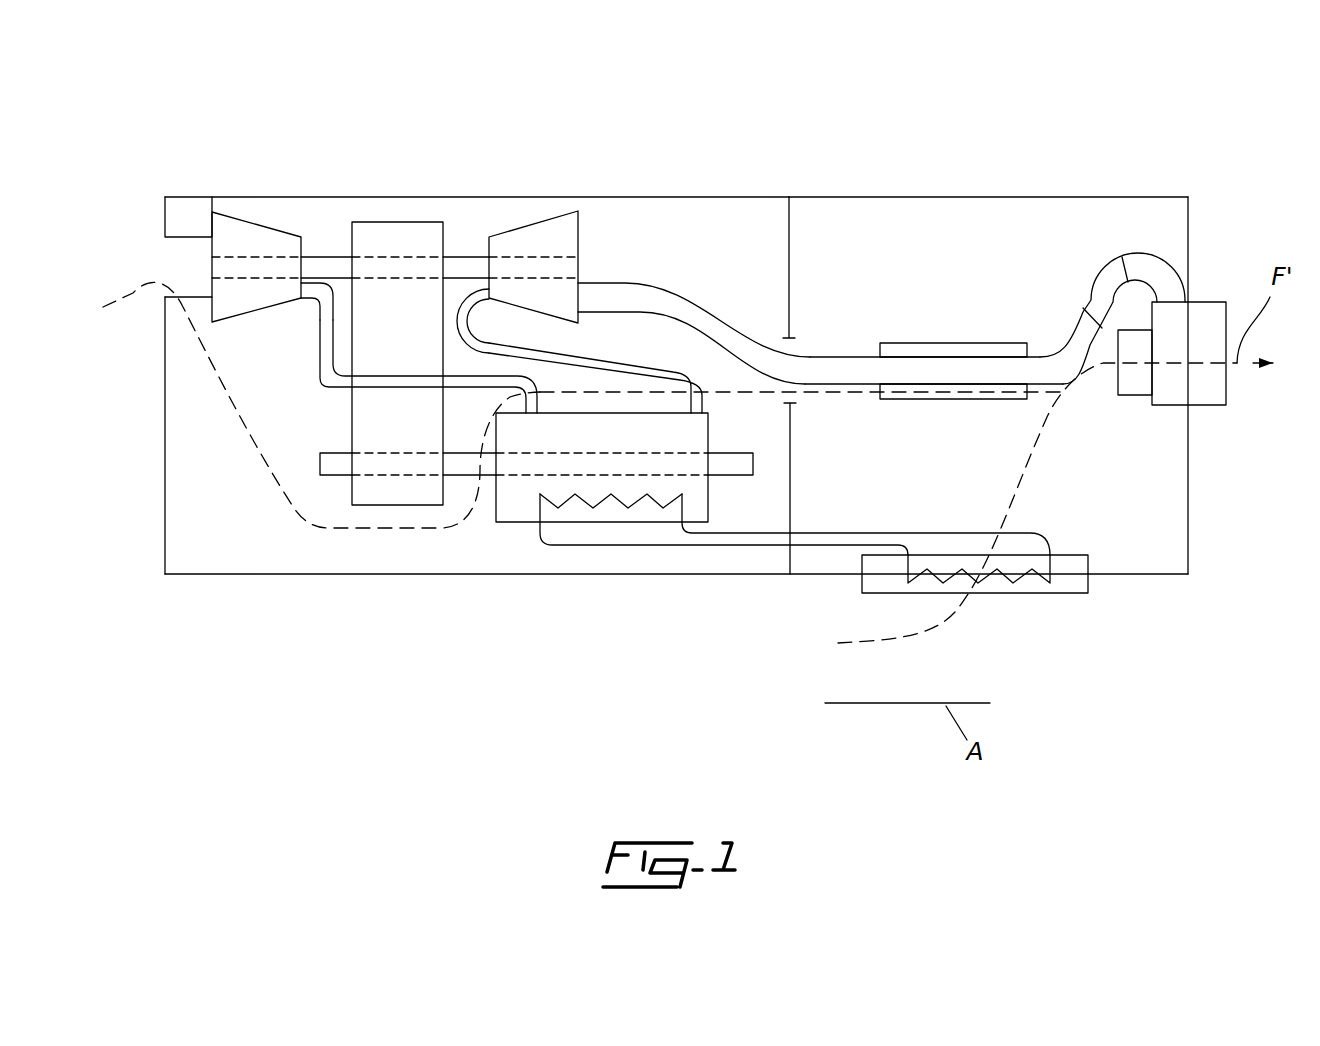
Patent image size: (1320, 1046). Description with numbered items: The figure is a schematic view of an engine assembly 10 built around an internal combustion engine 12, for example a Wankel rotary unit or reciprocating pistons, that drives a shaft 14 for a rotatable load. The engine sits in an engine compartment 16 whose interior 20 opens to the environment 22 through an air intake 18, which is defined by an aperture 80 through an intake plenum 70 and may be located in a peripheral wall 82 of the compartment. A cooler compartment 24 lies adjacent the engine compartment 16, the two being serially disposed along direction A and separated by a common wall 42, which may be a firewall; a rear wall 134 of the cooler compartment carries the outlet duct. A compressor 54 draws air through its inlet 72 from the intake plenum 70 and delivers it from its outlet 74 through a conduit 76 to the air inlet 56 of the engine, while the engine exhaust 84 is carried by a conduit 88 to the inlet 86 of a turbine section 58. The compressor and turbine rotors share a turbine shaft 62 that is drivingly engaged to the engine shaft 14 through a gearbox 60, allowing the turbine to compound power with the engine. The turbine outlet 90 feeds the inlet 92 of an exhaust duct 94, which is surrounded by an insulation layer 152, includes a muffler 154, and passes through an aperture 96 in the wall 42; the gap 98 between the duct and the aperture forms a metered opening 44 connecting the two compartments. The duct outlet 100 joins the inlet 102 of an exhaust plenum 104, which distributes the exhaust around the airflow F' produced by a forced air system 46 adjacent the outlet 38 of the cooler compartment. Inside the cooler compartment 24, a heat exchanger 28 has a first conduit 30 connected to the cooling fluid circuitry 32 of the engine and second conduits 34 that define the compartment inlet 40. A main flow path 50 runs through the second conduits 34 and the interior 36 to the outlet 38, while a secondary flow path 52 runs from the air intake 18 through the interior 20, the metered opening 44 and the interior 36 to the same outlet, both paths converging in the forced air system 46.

The engine assembly 10 is at (691, 348).
The internal combustion engine 12 is at (642, 492).
The shaft 14 is at (485, 465).
The engine compartment 16 is at (650, 197).
The air intake 18 is at (197, 371).
The aperture 80 is at (177, 315).
The interior 20 is at (753, 236).
The environment 22 is at (233, 664).
The cooler compartment 24 is at (1053, 197).
The heat exchanger 28 is at (1067, 594).
The first conduit 30 is at (692, 545).
The fluid circuitry 32 is at (688, 504).
The second conduits 34 is at (928, 610).
The interior 36 is at (1143, 228).
The outlet 38 is at (1200, 416).
The inlet 40 is at (1007, 580).
The wall 42 is at (795, 230).
The metered opening 44 is at (923, 309).
The gap 98 is at (806, 345).
The forced air system 46 is at (1133, 396).
The main flow path 50 is at (1027, 447).
The secondary flow path 52 is at (373, 531).
The compressor 54 is at (233, 217).
The air inlet 56 is at (538, 418).
The turbine section 58 is at (580, 227).
The gearbox 60 is at (390, 222).
The turbine shaft 62 is at (463, 257).
The intake plenum 70 is at (183, 181).
The inlet 72 is at (206, 228).
The outlet 74 is at (298, 306).
The conduit 76 is at (385, 348).
The peripheral wall 82 is at (165, 496).
The exhaust 84 is at (717, 405).
The inlet 86 is at (484, 311).
The conduit 88 is at (618, 369).
The outlet 90 is at (694, 320).
The inlet 92 is at (604, 278).
The exhaust duct 94 is at (881, 337).
The aperture 96 is at (806, 400).
The outlet 100 is at (1059, 297).
The inlet 102 is at (1059, 297).
The exhaust plenum 104 is at (1217, 347).
The rear wall 134 is at (1190, 535).
The insulation layer 152 is at (940, 343).
The muffler 154 is at (1098, 300).